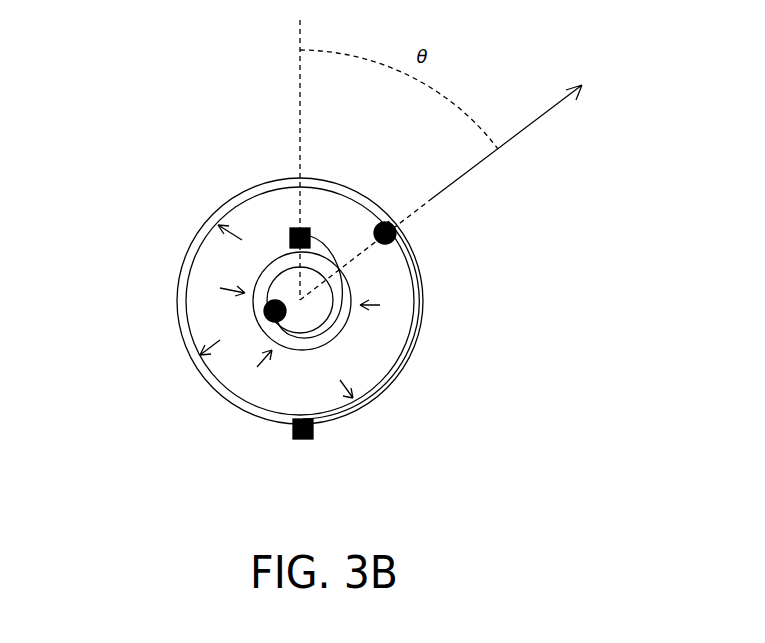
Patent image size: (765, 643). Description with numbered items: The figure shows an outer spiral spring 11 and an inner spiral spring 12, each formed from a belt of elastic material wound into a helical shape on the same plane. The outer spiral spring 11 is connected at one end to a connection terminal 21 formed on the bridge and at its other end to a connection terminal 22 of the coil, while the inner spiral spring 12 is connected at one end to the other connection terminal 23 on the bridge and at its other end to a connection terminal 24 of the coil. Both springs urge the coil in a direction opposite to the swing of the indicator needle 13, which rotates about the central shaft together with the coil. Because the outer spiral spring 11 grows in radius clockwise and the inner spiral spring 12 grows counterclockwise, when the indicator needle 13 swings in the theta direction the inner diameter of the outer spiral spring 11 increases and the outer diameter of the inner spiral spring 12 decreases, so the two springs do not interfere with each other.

The outer spiral spring 11 is at (423, 322).
The inner spiral spring 12 is at (253, 291).
The indicator needle 13 is at (550, 110).
The connection terminal 21 is at (293, 438).
The connection terminal 22 is at (397, 228).
The connection terminal 23 is at (292, 237).
The connection terminal 24 is at (264, 311).